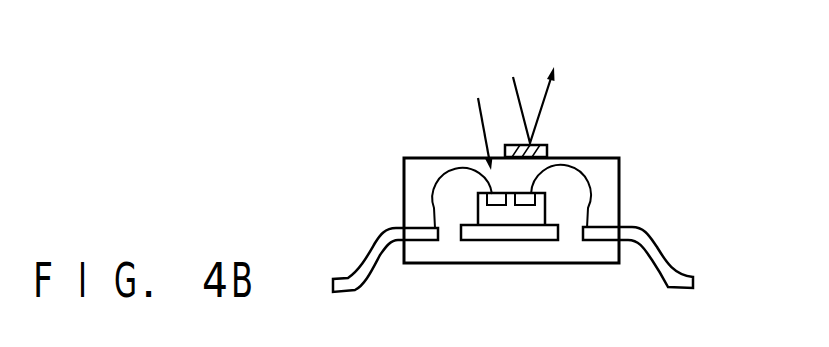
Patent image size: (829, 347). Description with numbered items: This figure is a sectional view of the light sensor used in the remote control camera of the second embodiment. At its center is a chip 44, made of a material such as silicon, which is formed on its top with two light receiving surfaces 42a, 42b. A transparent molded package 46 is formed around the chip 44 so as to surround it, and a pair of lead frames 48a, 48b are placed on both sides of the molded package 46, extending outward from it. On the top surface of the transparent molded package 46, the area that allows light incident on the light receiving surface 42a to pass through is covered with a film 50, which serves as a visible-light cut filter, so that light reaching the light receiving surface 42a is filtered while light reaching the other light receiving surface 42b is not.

The transparent molded package 46 is at (607, 172).
The lead frame 48a is at (662, 248).
The lead frame 48b is at (373, 243).
The chip 44 is at (518, 213).
The light receiving surface 42a is at (533, 205).
The light receiving surface 42b is at (496, 202).
The film 50 is at (548, 147).